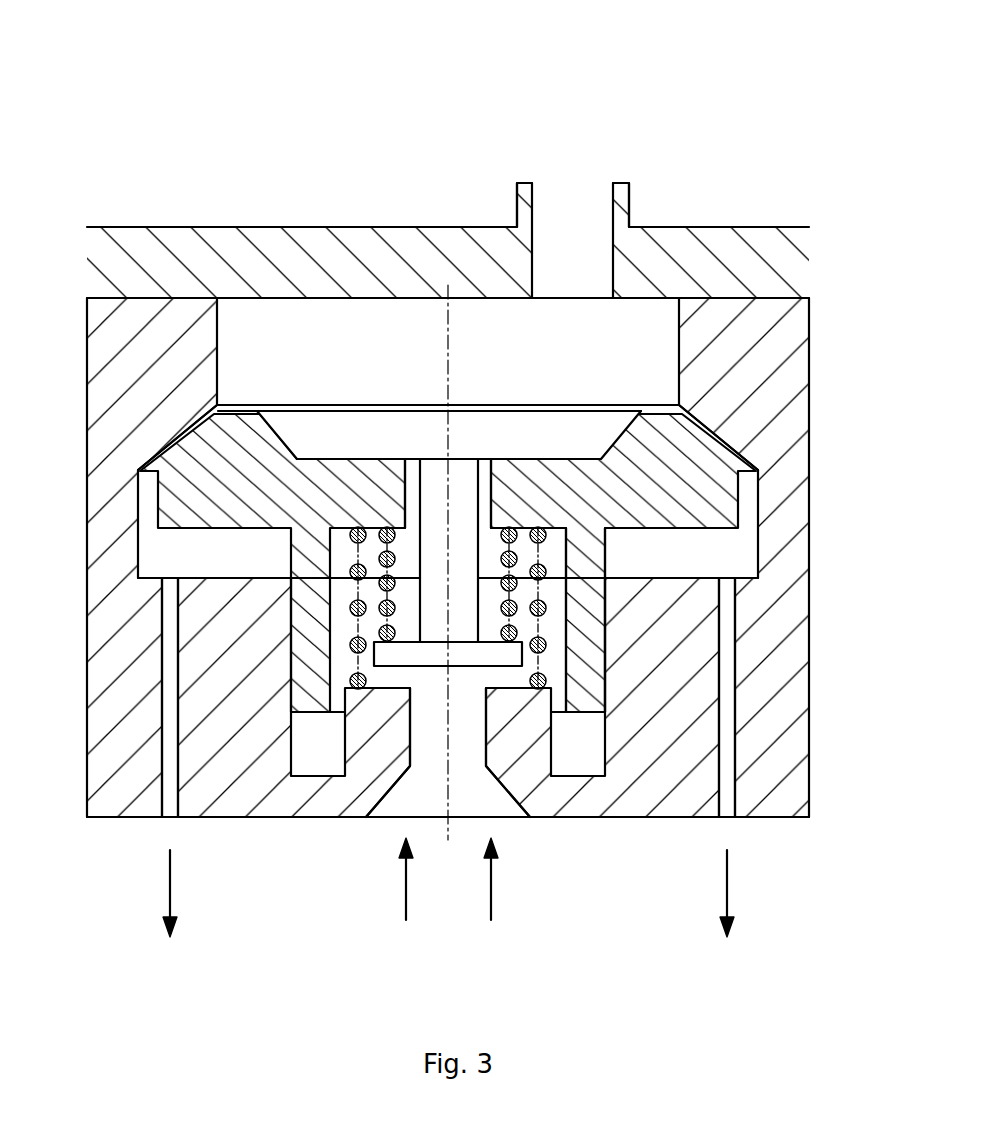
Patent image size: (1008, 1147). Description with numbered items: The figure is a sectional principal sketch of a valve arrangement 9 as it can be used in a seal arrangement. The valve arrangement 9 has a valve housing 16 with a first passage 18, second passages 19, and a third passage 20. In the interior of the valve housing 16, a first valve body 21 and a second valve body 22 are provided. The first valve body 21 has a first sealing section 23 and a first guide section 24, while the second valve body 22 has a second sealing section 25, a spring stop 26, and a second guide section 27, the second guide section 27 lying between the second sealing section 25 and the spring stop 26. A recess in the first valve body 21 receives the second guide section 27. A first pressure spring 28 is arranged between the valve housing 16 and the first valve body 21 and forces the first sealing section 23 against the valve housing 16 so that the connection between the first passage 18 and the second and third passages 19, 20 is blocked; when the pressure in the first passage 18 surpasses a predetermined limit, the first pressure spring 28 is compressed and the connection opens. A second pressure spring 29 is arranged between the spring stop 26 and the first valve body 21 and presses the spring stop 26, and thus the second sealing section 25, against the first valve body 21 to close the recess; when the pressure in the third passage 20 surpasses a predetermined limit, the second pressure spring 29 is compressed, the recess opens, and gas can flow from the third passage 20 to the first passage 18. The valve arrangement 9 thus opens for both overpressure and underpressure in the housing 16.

The valve arrangement 9 is at (780, 186).
The valve housing 16 is at (760, 355).
The first passage 18 is at (575, 192).
The second passages 19 is at (172, 775).
The third passage 20 is at (467, 812).
The first valve body 21 is at (740, 488).
The second valve body 22 is at (528, 407).
The first sealing section 23 is at (176, 432).
The first guide section 24 is at (592, 650).
The second sealing section 25 is at (362, 465).
The spring stop 26 is at (493, 655).
The second guide section 27 is at (468, 553).
The first pressure spring 28 is at (357, 645).
The second pressure spring 29 is at (378, 532).